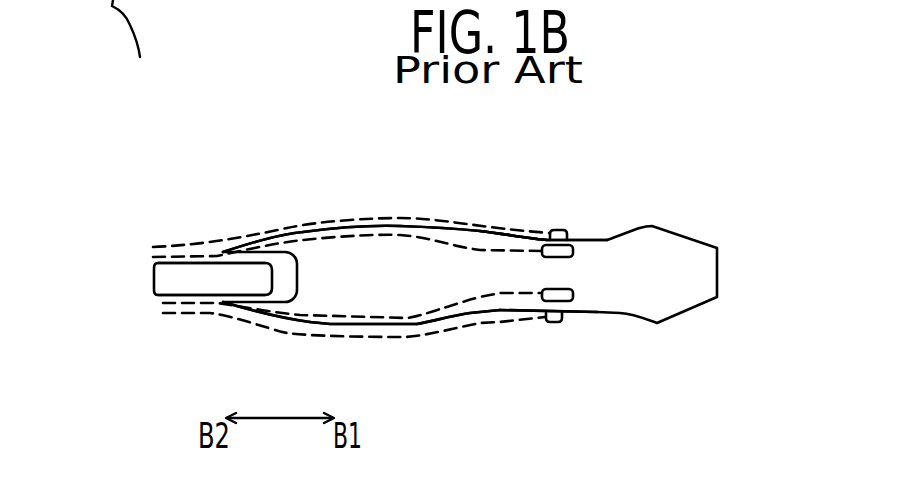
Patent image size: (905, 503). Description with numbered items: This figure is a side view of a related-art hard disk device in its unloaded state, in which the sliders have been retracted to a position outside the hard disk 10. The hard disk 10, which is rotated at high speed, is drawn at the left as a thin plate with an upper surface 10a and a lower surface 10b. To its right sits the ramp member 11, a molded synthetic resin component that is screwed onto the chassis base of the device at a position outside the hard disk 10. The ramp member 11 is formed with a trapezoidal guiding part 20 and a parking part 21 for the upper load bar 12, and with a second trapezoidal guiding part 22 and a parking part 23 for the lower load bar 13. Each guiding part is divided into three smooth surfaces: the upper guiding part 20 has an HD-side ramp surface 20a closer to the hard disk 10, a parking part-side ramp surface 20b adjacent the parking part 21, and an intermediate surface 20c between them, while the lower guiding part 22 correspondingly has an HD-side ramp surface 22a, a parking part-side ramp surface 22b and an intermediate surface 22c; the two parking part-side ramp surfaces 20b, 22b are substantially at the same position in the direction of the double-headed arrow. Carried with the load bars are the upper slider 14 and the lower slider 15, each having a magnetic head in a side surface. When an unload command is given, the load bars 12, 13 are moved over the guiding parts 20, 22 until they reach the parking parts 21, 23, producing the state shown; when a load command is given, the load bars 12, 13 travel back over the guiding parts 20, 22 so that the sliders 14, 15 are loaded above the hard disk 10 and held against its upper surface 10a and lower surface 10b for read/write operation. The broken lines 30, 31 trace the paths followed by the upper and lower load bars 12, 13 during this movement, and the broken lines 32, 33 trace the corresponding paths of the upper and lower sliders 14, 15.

The hard disk 10 is at (173, 275).
The upper surface 10a is at (173, 257).
The lower surface 10b is at (188, 298).
The ramp member 11 is at (648, 110).
The upper load bar 12 is at (565, 231).
The lower load bar 13 is at (559, 321).
The upper slider 14 is at (574, 246).
The lower slider 15 is at (573, 296).
The trapezoidal guiding part 20 is at (377, 223).
The HD-side ramp surface 20a is at (265, 230).
The parking part-side ramp surface 20b is at (457, 230).
The intermediate surface 20c is at (333, 227).
The parking part 21 is at (520, 235).
The trapezoidal guiding part 22 is at (380, 330).
The HD-side ramp surface 22a is at (265, 328).
The parking part-side ramp surface 22b is at (465, 322).
The intermediate surface 22c is at (340, 325).
The parking part 23 is at (523, 318).
The broken line 30 is at (415, 220).
The broken line 31 is at (437, 330).
The broken line 32 is at (393, 235).
The broken line 33 is at (417, 316).